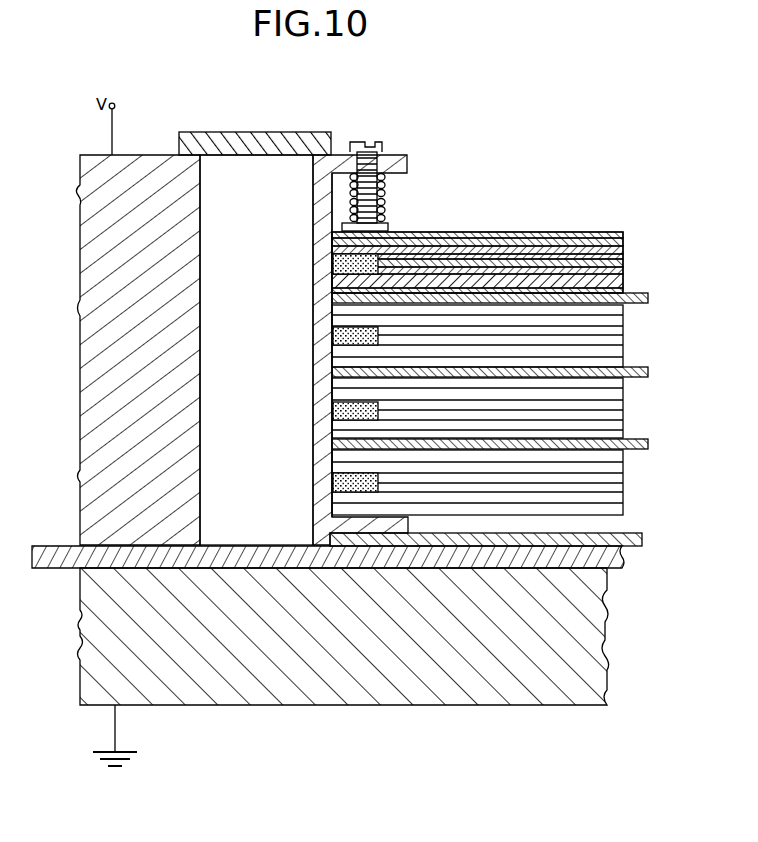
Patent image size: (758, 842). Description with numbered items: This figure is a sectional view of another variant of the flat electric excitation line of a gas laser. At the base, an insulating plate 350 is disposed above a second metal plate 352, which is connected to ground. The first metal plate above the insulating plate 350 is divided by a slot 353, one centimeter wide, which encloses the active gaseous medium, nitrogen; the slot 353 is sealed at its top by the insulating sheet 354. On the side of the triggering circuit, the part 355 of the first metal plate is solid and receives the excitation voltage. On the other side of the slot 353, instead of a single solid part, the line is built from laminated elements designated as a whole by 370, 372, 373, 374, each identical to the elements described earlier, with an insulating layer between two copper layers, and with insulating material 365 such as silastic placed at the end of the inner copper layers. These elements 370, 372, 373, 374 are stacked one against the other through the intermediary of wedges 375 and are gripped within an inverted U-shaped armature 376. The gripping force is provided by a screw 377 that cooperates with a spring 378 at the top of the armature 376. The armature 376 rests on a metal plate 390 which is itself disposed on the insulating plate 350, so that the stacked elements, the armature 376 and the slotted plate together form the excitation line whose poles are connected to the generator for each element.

The insulating plate 350 is at (63, 557).
The second metal plate 352 is at (583, 636).
The slot 353 is at (217, 170).
The insulating sheet 354 is at (291, 133).
The solid part of metal plate 355 is at (100, 362).
The insulating material 365 is at (325, 337).
The stacked element 370 is at (625, 258).
The stacked element 372 is at (626, 349).
The stacked element 373 is at (626, 422).
The stacked element 374 is at (626, 502).
The wedge 375 is at (641, 297).
The inverted U-shaped armature 376 is at (322, 298).
The screw 377 is at (385, 147).
The spring 378 is at (388, 198).
The metal plate 390 is at (634, 537).